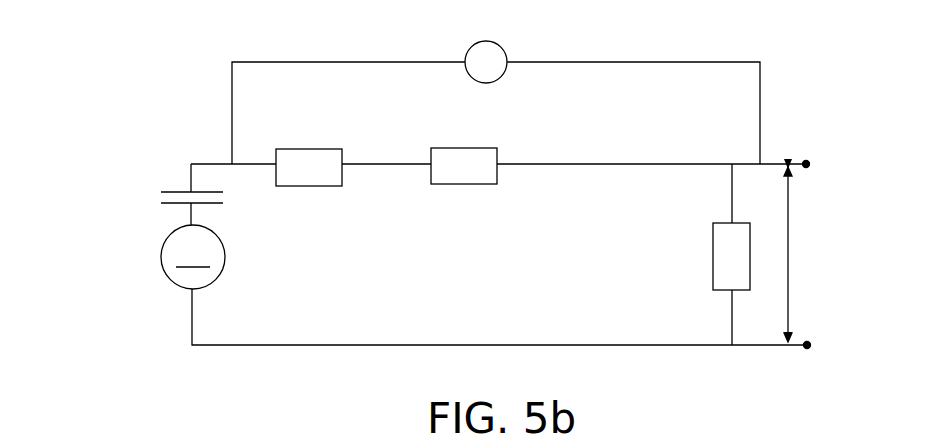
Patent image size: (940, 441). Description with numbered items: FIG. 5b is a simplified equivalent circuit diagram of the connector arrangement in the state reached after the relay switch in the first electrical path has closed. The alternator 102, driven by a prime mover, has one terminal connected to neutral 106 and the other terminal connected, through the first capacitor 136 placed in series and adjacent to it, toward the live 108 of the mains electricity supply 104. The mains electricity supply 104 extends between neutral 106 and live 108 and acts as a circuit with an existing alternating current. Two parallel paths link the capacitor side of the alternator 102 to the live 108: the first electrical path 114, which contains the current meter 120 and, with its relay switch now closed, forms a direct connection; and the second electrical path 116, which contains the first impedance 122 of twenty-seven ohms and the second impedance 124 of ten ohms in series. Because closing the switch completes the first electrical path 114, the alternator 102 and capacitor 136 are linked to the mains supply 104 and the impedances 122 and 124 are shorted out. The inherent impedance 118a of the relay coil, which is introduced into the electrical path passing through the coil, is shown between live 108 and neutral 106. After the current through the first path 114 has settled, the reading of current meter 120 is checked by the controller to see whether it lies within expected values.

The alternator 102 is at (193, 257).
The mains electricity supply 104 is at (788, 272).
The neutral 106 is at (810, 347).
The live 108 is at (808, 162).
The first electrical path 114 is at (782, 96).
The second electrical path 116 is at (567, 179).
The inherent impedance of the relay coil 118a is at (715, 288).
The current meter 120 is at (500, 44).
The first impedance 122 is at (308, 149).
The second impedance 124 is at (455, 148).
The first capacitor 136 is at (170, 192).